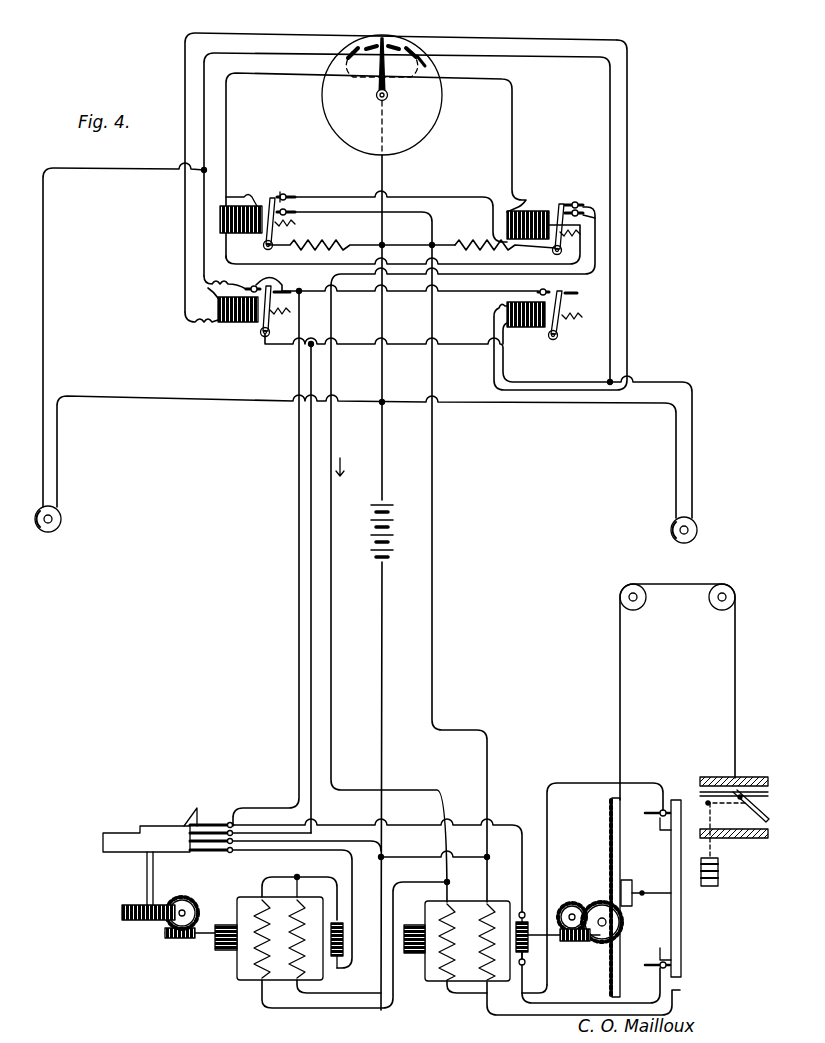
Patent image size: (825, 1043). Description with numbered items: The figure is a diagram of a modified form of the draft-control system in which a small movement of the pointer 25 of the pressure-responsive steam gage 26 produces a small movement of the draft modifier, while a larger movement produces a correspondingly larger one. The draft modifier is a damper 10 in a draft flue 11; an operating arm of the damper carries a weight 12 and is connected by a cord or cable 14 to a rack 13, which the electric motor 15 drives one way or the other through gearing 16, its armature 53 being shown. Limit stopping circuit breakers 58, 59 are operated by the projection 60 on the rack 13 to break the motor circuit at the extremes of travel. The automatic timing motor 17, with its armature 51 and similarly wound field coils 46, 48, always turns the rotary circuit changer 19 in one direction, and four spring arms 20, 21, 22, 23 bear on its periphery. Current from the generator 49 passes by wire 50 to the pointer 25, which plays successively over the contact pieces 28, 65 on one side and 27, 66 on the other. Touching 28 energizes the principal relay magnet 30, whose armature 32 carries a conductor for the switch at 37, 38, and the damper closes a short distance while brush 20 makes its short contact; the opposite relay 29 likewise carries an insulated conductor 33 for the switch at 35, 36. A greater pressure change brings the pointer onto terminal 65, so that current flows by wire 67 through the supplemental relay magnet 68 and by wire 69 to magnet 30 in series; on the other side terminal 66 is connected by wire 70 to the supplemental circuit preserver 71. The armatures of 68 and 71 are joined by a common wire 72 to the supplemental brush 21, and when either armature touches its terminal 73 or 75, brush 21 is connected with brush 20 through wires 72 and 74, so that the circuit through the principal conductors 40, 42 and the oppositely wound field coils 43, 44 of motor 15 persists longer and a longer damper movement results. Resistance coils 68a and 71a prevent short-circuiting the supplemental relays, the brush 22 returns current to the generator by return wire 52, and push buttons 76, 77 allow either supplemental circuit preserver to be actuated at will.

The damper 10 is at (741, 790).
The draft flue 11 is at (756, 838).
The weight 12 is at (715, 888).
The rack 13 is at (619, 858).
The cord or cable 14 is at (735, 672).
The electric motor 15 is at (472, 985).
The gearing 16 is at (598, 945).
The automatic timing motor 17 is at (240, 960).
The rotary circuit changer 19 is at (122, 832).
The spring arm 20 is at (226, 822).
The spring arm 21 is at (201, 826).
The spring arm 22 is at (225, 836).
The spring arm 23 is at (208, 852).
The pointer 25 is at (394, 45).
The steam gage 26 is at (430, 112).
The contact terminal 27 is at (374, 45).
The contact terminal 28 is at (412, 50).
The relay magnet 29 is at (220, 217).
The relay magnet 30 is at (525, 210).
The armature 32 is at (561, 204).
The insulated conductor 33 is at (271, 197).
The switch contact 35 is at (292, 196).
The switch contact 36 is at (298, 224).
The switch contact 37 is at (580, 200).
The switch contact 38 is at (598, 218).
The principal conductor 40 is at (330, 593).
The principal conductor 42 is at (391, 557).
The field-magnet coil 43 is at (450, 910).
The field-magnet coil 44 is at (490, 910).
The field magnet coil 46 is at (300, 960).
The field magnet coil 48 is at (262, 962).
The generator 49 is at (390, 517).
The wire 50 is at (385, 178).
The armature 51 is at (344, 935).
The return wire 52 is at (378, 658).
The armature 53 is at (525, 932).
The limit stopping circuit breaker 58 is at (658, 808).
The limit stopping circuit breaker 59 is at (650, 968).
The projection 60 is at (646, 898).
The contact piece 65 is at (430, 58).
The contact piece 66 is at (346, 52).
The wire 67 is at (612, 90).
The supplemental circuit preserver 68 is at (533, 330).
The resistance coil 68a is at (470, 244).
The wire 69 is at (560, 203).
The wire 70 is at (185, 66).
The supplemental circuit preserver 71 is at (240, 324).
The resistance coil 71a is at (361, 236).
The common wire 72 is at (307, 540).
The terminal 73 is at (580, 297).
The wire 74 is at (296, 467).
The terminal 75 is at (248, 286).
The push button 76 is at (58, 520).
The push button 77 is at (694, 532).